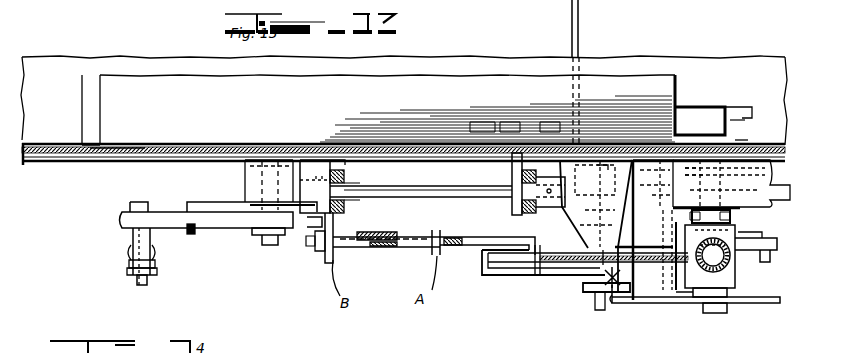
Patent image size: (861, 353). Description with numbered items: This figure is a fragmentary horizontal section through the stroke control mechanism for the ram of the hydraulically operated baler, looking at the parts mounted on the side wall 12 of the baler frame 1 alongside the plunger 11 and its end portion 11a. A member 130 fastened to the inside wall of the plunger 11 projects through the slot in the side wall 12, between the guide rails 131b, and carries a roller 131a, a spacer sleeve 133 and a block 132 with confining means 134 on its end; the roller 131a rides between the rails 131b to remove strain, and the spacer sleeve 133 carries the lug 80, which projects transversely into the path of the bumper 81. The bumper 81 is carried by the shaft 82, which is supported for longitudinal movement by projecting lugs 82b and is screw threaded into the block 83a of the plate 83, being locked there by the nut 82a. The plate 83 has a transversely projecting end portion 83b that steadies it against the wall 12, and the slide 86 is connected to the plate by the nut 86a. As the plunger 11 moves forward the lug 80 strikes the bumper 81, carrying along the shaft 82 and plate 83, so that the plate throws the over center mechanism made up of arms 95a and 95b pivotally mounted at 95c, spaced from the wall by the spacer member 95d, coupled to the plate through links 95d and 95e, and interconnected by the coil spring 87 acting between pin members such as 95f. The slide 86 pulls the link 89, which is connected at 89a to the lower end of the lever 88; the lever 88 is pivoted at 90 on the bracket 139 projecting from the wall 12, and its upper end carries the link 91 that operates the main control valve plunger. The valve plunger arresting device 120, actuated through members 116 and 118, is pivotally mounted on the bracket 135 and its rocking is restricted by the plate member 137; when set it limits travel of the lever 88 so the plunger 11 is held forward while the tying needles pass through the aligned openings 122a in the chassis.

The machine frame 1 is at (62, 153).
The plunger 11 is at (178, 85).
The table block end portion 11a is at (95, 82).
The side wall 12 is at (45, 138).
The lug 80 is at (653, 230).
The bumper 81 is at (513, 212).
The shaft 82 is at (385, 200).
The nut 82a is at (352, 188).
The projecting lugs 82b is at (508, 176).
The plate 83 is at (322, 160).
The block 83a is at (280, 144).
The transversely projecting end portion 83b is at (340, 145).
The slide 86 is at (403, 265).
The nut 86a is at (300, 265).
The spring 87 is at (126, 266).
The lever 88 is at (603, 258).
The link 89 is at (480, 285).
The connection of link to lever 89a is at (525, 278).
The pivot 90 is at (598, 312).
The link 91 is at (648, 306).
The arm 95a is at (162, 212).
The arm 95b is at (225, 240).
The pivot 95c is at (292, 235).
The spacer member 95d is at (258, 170).
The link 95e is at (206, 236).
The pin member 95f is at (134, 289).
The member 116 is at (582, 32).
The member 118 is at (750, 232).
The valve plunger arresting device 120 is at (486, 272).
The aligned openings 122a is at (110, 151).
The member 130 is at (730, 120).
The roller 131a is at (740, 140).
The rails 131b is at (688, 158).
The block 132 is at (742, 285).
The spacer sleeve 133 is at (703, 205).
The confining means 134 is at (710, 313).
The bracket 135 is at (673, 306).
The plate member 137 is at (652, 258).
The bracket 139 is at (612, 146).